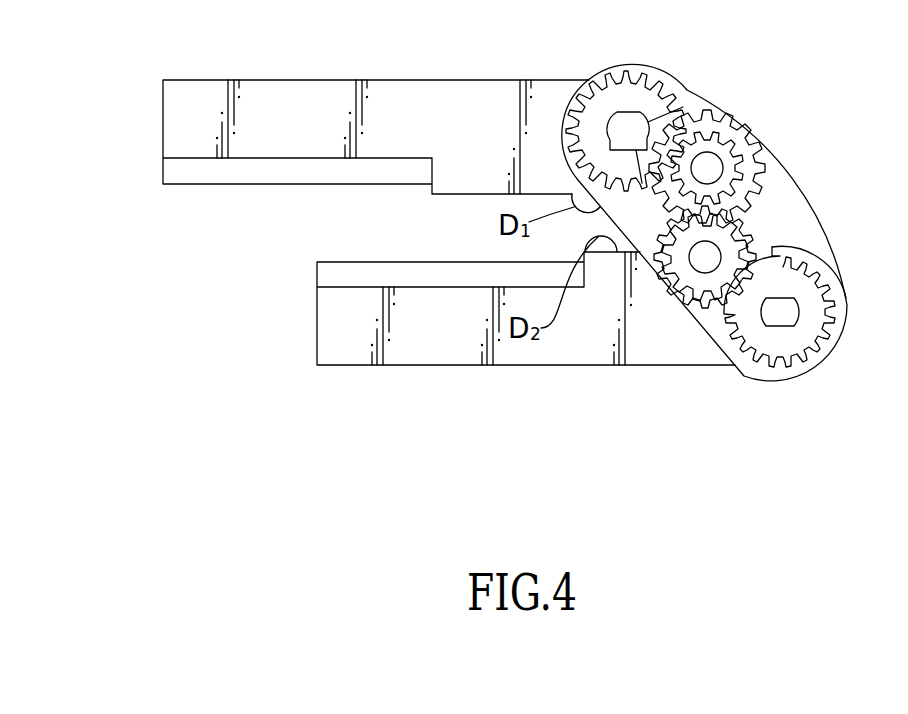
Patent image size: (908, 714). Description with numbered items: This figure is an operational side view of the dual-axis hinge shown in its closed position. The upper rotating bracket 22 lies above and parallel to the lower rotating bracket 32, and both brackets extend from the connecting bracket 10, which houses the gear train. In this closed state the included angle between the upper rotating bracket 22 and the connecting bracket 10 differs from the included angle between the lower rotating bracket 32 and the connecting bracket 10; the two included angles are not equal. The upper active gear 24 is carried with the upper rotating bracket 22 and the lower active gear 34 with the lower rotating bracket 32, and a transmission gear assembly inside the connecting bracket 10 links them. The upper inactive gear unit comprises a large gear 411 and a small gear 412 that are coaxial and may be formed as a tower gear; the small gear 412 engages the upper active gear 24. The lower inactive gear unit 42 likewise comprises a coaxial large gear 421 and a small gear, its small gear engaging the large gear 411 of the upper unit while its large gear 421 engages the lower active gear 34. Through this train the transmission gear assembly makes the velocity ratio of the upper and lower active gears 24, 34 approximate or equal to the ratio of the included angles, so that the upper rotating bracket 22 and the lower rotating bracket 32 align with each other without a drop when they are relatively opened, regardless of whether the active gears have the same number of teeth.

The connecting bracket 10 is at (704, 87).
The upper rotating bracket 22 is at (272, 92).
The upper active gear 24 is at (620, 90).
The lower rotating bracket 32 is at (441, 354).
The lower active gear 34 is at (830, 331).
The large gear 411 is at (728, 114).
The small gear 412 is at (742, 156).
The lower inactive gear unit 42 is at (750, 233).
The large gear 421 is at (697, 308).